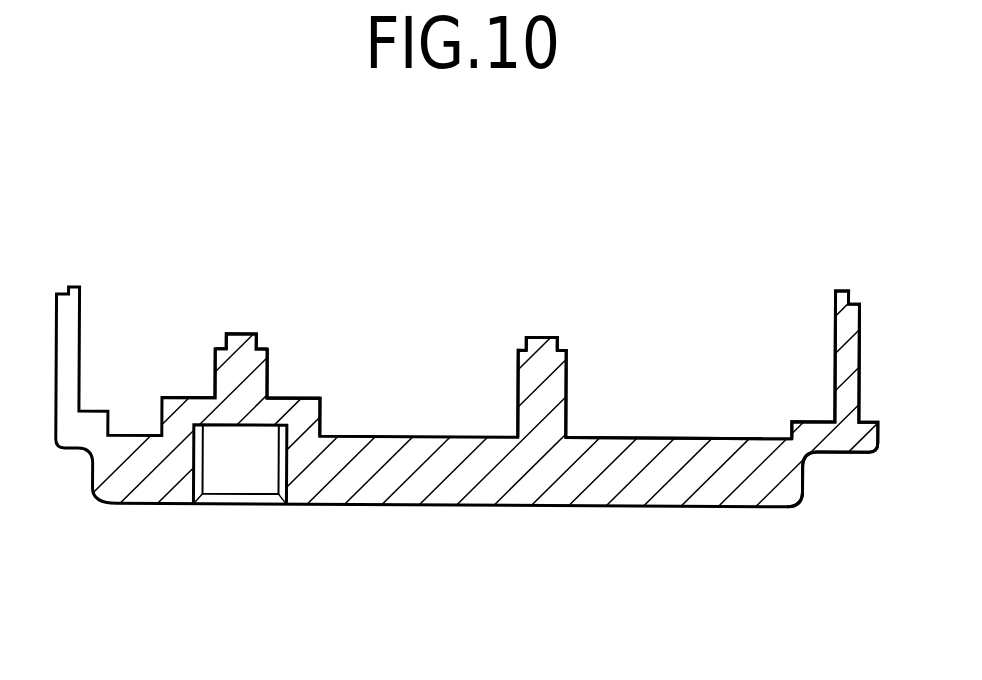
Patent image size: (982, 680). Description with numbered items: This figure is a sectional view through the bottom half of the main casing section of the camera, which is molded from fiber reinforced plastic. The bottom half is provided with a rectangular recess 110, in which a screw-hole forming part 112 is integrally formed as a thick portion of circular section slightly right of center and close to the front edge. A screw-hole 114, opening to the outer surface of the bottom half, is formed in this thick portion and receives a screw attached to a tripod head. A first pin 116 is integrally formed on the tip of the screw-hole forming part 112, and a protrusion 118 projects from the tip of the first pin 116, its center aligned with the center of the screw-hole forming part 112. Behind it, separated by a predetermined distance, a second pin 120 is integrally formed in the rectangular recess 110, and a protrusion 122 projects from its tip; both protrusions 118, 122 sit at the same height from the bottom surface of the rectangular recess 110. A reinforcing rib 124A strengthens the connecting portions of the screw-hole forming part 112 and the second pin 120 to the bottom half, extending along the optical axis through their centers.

The rectangular recess 110 is at (792, 431).
The screw-hole forming part 112 is at (321, 422).
The screw-hole 114 is at (203, 460).
The first pin 116 is at (267, 372).
The protrusion 118 is at (241, 335).
The second pin 120 is at (567, 373).
The protrusion 122 is at (541, 337).
The reinforcing rib 124A is at (675, 450).